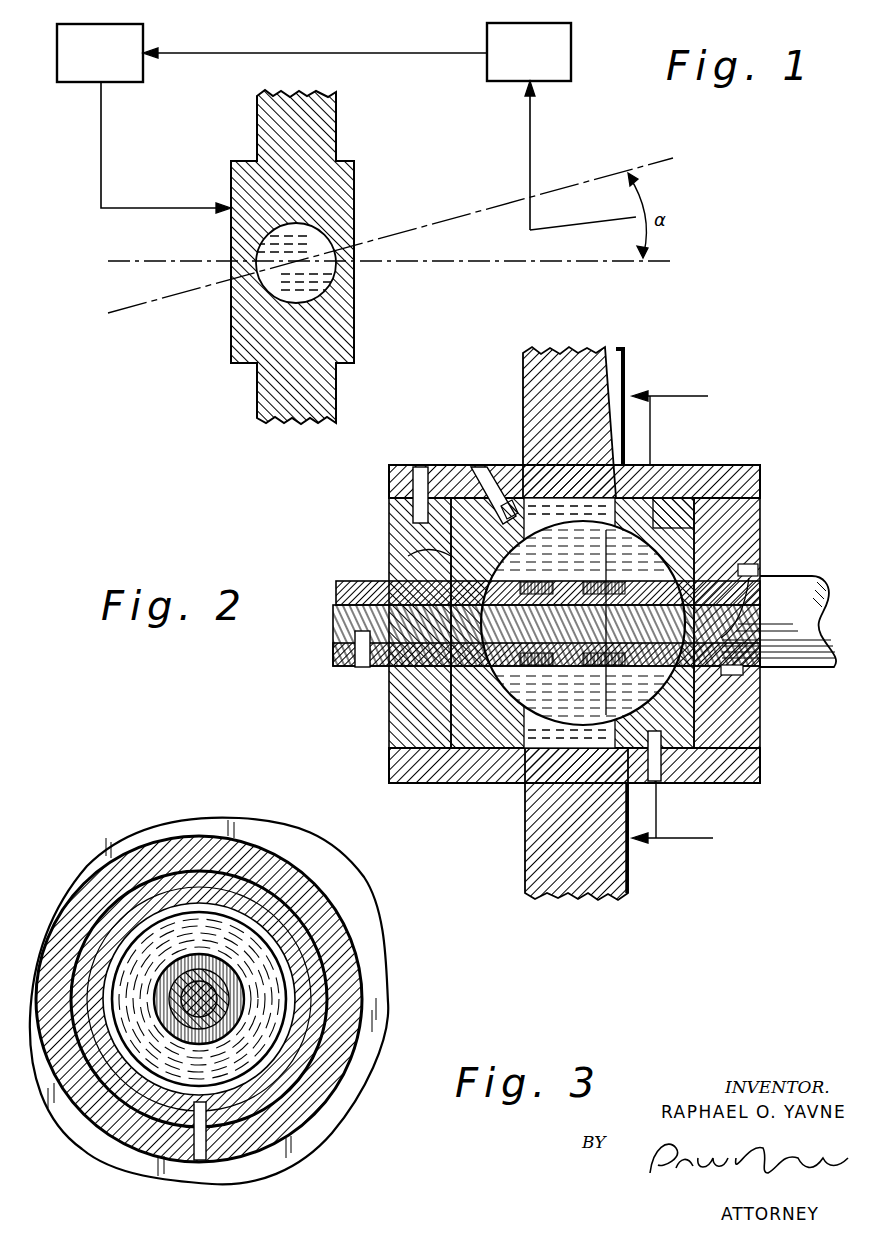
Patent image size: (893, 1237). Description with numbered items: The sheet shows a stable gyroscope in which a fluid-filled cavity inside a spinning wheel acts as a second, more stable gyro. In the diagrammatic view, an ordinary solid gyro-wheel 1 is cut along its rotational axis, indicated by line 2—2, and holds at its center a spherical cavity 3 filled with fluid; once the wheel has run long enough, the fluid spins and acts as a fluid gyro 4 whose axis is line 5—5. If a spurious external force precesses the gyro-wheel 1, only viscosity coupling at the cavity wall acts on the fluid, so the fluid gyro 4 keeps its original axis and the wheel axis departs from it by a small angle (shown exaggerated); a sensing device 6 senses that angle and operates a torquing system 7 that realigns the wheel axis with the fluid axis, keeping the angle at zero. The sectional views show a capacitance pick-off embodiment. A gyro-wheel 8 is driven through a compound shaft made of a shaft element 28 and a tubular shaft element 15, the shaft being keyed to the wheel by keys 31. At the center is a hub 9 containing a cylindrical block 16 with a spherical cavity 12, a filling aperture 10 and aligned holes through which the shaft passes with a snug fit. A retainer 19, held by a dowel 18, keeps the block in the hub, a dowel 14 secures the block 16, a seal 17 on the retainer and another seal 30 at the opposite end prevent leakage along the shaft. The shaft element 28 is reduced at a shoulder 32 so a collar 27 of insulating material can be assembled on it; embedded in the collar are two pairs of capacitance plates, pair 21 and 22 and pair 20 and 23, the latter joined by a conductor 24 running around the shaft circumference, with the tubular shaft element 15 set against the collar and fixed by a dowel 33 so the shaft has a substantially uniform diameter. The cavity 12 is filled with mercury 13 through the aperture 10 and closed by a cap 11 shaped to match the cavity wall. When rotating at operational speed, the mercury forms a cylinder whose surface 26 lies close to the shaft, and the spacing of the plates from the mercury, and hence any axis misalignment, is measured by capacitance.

In FIG. 1, the gyro-wheel 1 is at (343, 332).
In FIG. 1, the rotational axis line 2— 2 is at (396, 261).
In FIG. 1, the spherical cavity 3 is at (313, 232).
In FIG. 2, the spherical cavity 3 is at (679, 619).
In FIG. 1, the fluid gyro 4 is at (283, 292).
In FIG. 1, the fluid gyro axis line 5— 5 is at (396, 239).
In FIG. 1, the sensing device 6 is at (529, 52).
In FIG. 1, the torquing system 7 is at (100, 53).
In FIG. 2, the gyro-wheel 8 is at (515, 374).
In FIG. 3, the gyro-wheel 8 is at (272, 835).
In FIG. 2, the hub 9 is at (735, 470).
In FIG. 3, the hub 9 is at (320, 1060).
In FIG. 2, the filling aperture 10 is at (470, 460).
In FIG. 2, the cap 11 is at (500, 480).
In FIG. 2, the spherical cavity 12 is at (530, 782).
In FIG. 3, the spherical cavity 12 is at (130, 1055).
In FIG. 2, the mercury 13 is at (535, 702).
In FIG. 3, the mercury 13 is at (198, 892).
In FIG. 2, the dowel 14 is at (648, 752).
In FIG. 3, the dowel 14 is at (192, 1152).
In FIG. 2, the tubular shaft element 15 is at (332, 583).
In FIG. 2, the cylindrical block 16 is at (690, 517).
In FIG. 3, the cylindrical block 16 is at (118, 905).
In FIG. 2, the seal 17 is at (405, 548).
In FIG. 2, the dowel 18 is at (412, 458).
In FIG. 2, the retainer 19 is at (400, 523).
In FIG. 2, the capacitance plate 20 is at (536, 642).
In FIG. 2, the capacitance plate 21 is at (640, 648).
In FIG. 3, the capacitance plate 21 is at (222, 1028).
In FIG. 2, the capacitance plate 22 is at (518, 600).
In FIG. 2, the capacitance plate 23 is at (625, 580).
In FIG. 3, the capacitance plate 23 is at (213, 967).
In FIG. 2, the conductor 24 is at (575, 610).
In FIG. 2, the vacuum cylinder surface 26 is at (510, 563).
In FIG. 3, the vacuum cylinder surface 26 is at (176, 1042).
In FIG. 2, the insulating collar 27 is at (485, 624).
In FIG. 3, the insulating collar 27 is at (209, 994).
In FIG. 2, the shaft element 28 is at (330, 613).
In FIG. 3, the shaft element 28 is at (237, 991).
In FIG. 2, the seal 30 is at (695, 670).
In FIG. 2, the keys 31 is at (752, 546).
In FIG. 2, the shoulder 32 is at (690, 690).
In FIG. 2, the dowel 33 is at (354, 660).